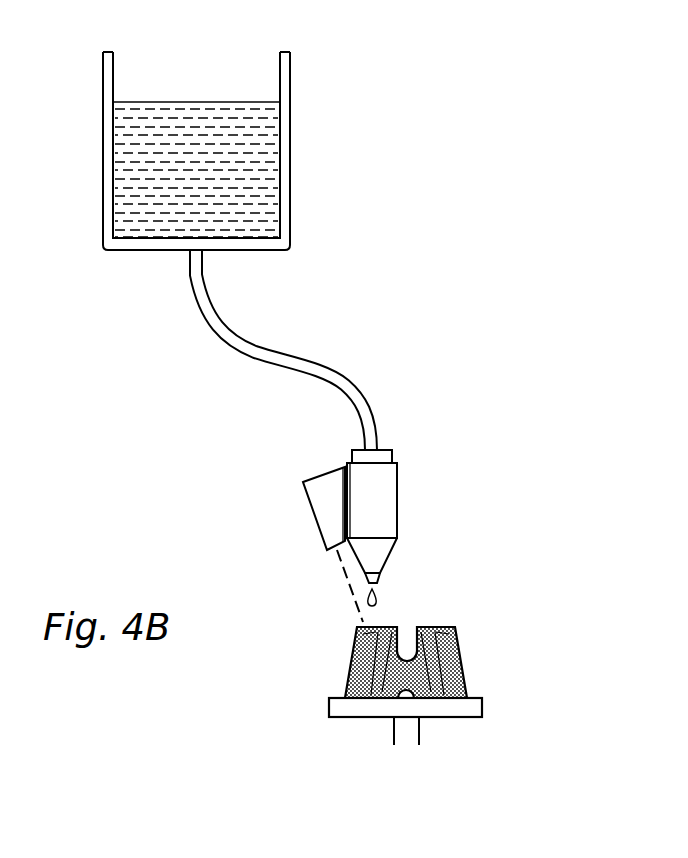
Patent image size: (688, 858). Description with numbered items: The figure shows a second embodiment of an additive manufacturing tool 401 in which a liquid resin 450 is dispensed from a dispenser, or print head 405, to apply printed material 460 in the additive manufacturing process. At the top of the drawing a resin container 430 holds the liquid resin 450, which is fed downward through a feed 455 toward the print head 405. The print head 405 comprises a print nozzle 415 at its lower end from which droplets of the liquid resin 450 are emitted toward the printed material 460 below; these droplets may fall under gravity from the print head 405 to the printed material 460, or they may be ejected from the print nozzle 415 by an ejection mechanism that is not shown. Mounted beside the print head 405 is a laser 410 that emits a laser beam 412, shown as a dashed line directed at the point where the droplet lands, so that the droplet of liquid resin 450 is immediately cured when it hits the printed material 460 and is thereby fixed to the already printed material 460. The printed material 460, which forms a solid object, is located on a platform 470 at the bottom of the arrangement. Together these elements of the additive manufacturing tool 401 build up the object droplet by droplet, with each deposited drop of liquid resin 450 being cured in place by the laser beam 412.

The additive manufacturing tool 401 is at (482, 206).
The print head 405 is at (388, 492).
The laser 410 is at (325, 502).
The laser beam 412 is at (347, 580).
The print nozzle 415 is at (376, 584).
The resin container 430 is at (290, 150).
The liquid resin 450 is at (203, 127).
The feed 455 is at (345, 375).
The printed material 460 is at (442, 650).
The platform 470 is at (475, 708).